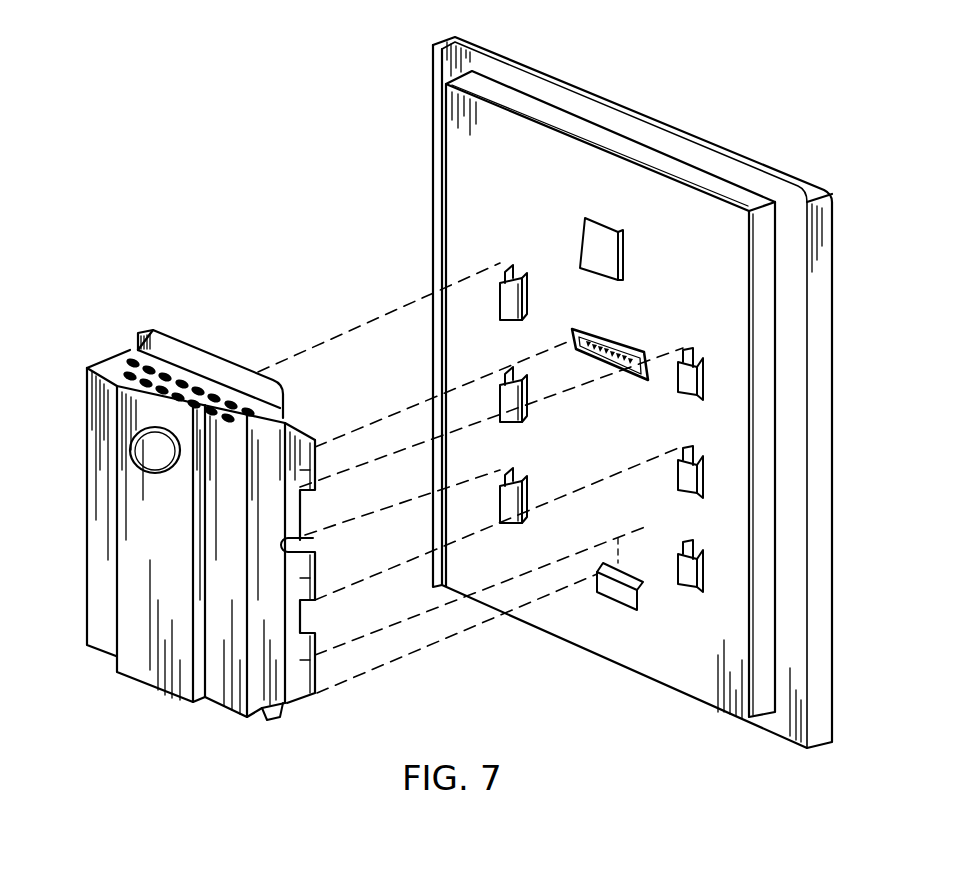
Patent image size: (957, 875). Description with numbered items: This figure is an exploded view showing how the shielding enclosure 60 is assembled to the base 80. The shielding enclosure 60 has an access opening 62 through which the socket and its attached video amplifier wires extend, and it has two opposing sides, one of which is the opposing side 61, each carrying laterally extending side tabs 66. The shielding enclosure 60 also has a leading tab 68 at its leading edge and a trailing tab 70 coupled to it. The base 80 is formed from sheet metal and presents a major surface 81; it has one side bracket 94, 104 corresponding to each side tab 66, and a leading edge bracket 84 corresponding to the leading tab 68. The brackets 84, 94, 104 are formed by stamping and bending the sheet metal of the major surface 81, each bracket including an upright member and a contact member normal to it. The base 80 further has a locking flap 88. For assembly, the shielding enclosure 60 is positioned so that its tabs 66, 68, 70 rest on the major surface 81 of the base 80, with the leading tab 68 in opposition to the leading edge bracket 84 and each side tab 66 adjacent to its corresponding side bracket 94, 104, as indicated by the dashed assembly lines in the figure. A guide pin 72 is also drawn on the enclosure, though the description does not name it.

The shielding enclosure 60 is at (92, 351).
The opposing side 61 is at (298, 425).
The access opening 62 is at (152, 447).
The side tab 66 is at (310, 440).
The leading tab 68 is at (272, 720).
The trailing tab 70 is at (201, 365).
The guide pin 72 is at (300, 537).
The base 80 is at (407, 229).
The major surface 81 is at (538, 143).
The leading edge bracket 84 is at (614, 615).
The locking flap 88 is at (590, 243).
The side bracket 94 is at (495, 280).
The side bracket 104 is at (707, 362).